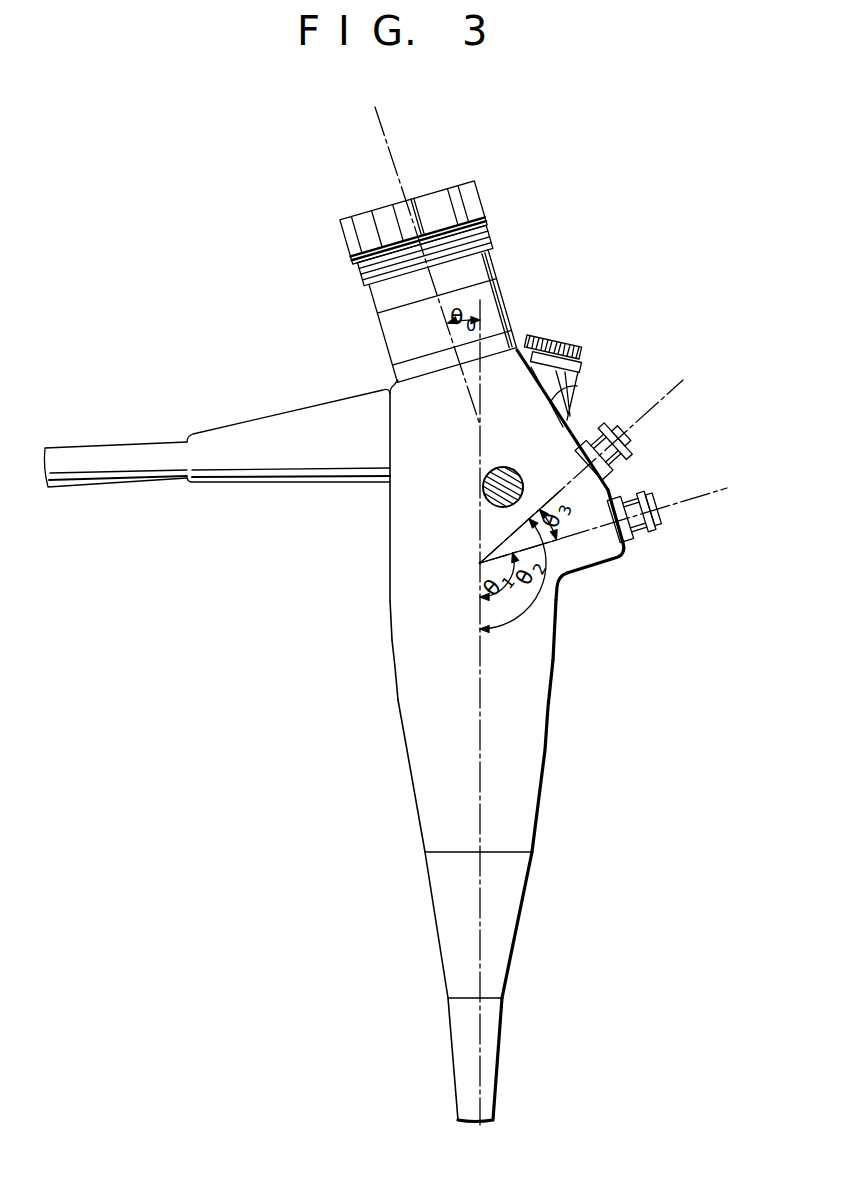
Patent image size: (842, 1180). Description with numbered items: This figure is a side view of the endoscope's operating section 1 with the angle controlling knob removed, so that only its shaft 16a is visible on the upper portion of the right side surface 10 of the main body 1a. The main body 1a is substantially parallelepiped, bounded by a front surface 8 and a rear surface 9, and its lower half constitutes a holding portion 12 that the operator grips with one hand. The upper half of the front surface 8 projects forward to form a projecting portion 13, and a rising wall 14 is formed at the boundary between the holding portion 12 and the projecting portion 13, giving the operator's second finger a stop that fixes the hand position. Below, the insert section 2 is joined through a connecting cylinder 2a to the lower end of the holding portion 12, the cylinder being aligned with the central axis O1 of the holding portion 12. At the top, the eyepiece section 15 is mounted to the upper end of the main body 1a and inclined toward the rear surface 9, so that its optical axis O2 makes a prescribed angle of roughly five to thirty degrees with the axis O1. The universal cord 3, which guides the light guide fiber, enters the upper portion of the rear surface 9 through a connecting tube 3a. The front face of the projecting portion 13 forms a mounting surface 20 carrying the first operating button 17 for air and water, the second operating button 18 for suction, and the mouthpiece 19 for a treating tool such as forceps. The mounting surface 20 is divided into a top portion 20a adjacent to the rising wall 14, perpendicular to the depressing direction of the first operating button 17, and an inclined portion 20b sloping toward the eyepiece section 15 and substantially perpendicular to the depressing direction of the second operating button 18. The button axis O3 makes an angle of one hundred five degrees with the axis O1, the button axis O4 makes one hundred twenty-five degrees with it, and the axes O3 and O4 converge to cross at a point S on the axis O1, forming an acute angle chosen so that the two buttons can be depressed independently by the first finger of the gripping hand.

The operating section 1 is at (486, 601).
The main body 1a is at (412, 720).
The insert section 2 is at (473, 987).
The connecting cylinder 2a is at (447, 951).
The universal cord 3 is at (128, 462).
The connecting tube 3a is at (232, 436).
The front surface 8 is at (557, 633).
The rear surface 9 is at (389, 607).
The right side surface 10 is at (526, 708).
The holding portion 12 is at (410, 668).
The projecting portion 13 is at (593, 565).
The rising wall 14 is at (572, 576).
The eyepiece section 15 is at (447, 190).
The shaft 16a is at (485, 495).
The first operating button 17 is at (641, 543).
The second operating button 18 is at (620, 467).
The mouthpiece 19 is at (577, 369).
The mounting surface 20 is at (607, 486).
The top portion 20a is at (643, 530).
The inclined portion 20b is at (570, 392).
The central axis of the holding portion O1 is at (481, 748).
The optical axis of the eyepiece section O2 is at (386, 147).
The central axis of the first operating button O3 is at (706, 498).
The central axis of the second operating button O4 is at (665, 399).
The cross point S is at (478, 565).